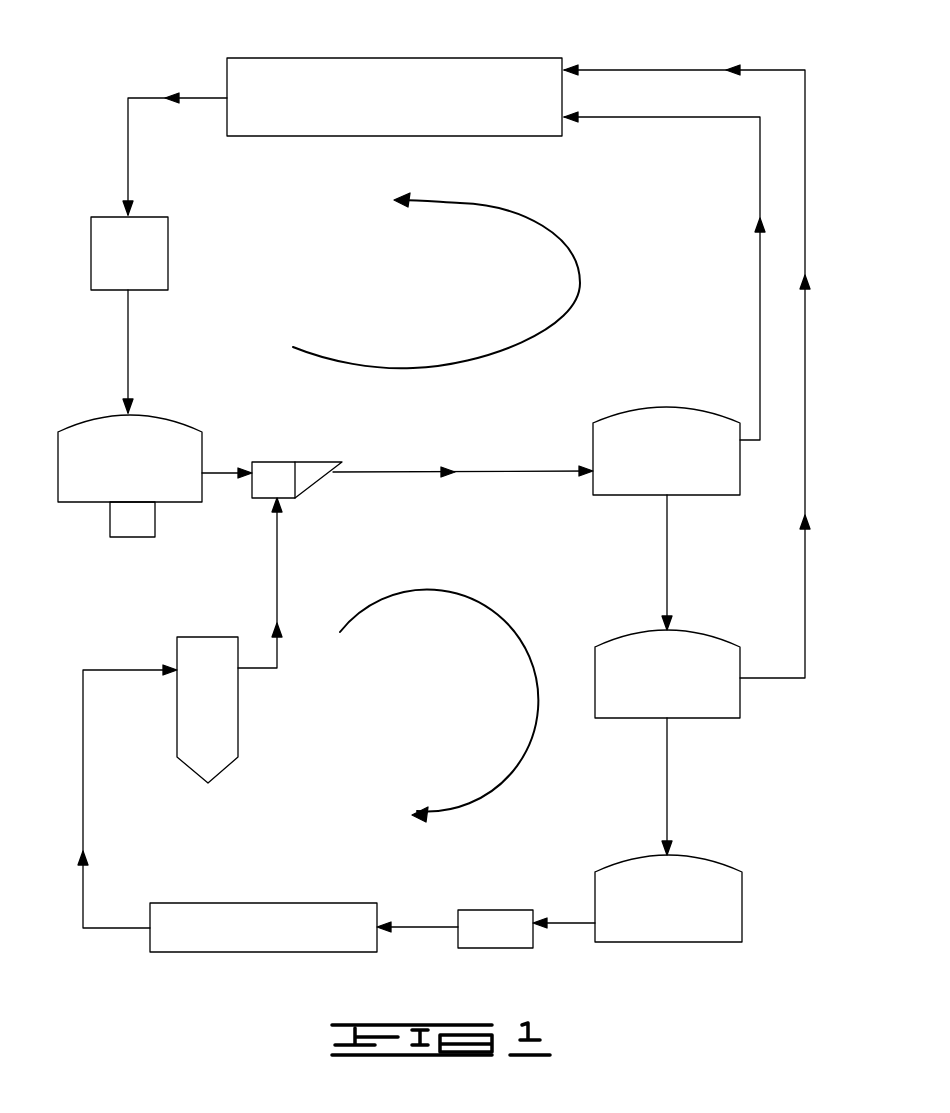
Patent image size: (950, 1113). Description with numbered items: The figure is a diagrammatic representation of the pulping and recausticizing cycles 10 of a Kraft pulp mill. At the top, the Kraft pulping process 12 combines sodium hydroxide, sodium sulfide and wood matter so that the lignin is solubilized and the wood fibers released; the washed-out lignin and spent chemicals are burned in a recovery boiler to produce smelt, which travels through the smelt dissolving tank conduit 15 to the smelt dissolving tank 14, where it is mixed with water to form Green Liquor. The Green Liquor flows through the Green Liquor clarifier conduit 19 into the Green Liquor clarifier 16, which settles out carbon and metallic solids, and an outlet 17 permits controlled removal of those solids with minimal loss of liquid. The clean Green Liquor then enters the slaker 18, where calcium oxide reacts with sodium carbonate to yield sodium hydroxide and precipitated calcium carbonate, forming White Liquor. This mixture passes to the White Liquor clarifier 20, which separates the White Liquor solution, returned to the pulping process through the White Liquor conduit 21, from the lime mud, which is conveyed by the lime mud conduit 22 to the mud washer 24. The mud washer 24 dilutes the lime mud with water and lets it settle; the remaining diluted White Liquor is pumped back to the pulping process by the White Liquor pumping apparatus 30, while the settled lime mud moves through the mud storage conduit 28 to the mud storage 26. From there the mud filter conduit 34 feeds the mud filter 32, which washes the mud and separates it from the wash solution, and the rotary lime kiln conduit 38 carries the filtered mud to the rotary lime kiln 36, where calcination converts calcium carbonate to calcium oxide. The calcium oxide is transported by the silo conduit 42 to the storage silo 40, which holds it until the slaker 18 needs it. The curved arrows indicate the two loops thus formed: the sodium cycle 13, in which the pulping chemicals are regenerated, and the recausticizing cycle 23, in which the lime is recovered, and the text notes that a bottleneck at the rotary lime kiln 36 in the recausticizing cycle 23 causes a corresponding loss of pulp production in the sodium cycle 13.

The pulping and recausticizing cycles 10 is at (192, 65).
The Kraft pulping process 12 is at (462, 72).
The sodium cycle 13 is at (540, 228).
The smelt dissolving tank 14 is at (160, 268).
The smelt dissolving tank conduit 15 is at (128, 150).
The Green Liquor clarifier 16 is at (165, 427).
The outlet 17 is at (132, 530).
The slaker 18 is at (273, 462).
The Green Liquor clarifier conduit 19 is at (128, 333).
The White Liquor clarifier 20 is at (703, 495).
The White Liquor conduit 21 is at (760, 275).
The lime mud conduit 22 is at (667, 563).
The recausticizing cycle 23 is at (500, 613).
The mud washer 24 is at (703, 718).
The mud storage 26 is at (723, 918).
The mud storage conduit 28 is at (667, 797).
The White Liquor pumping apparatus 30 is at (760, 70).
The mud filter 32 is at (495, 948).
The mud filter conduit 34 is at (570, 923).
The rotary lime kiln 36 is at (250, 937).
The rotary lime kiln conduit 38 is at (427, 927).
The storage silo 40 is at (228, 710).
The silo conduit 42 is at (83, 788).